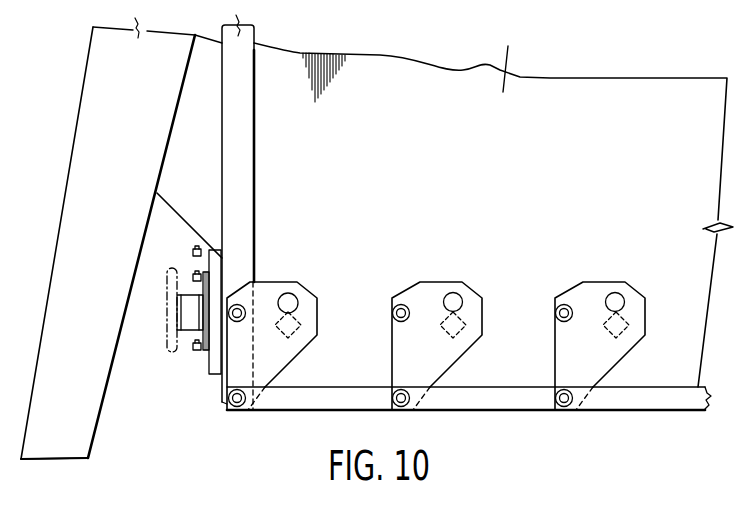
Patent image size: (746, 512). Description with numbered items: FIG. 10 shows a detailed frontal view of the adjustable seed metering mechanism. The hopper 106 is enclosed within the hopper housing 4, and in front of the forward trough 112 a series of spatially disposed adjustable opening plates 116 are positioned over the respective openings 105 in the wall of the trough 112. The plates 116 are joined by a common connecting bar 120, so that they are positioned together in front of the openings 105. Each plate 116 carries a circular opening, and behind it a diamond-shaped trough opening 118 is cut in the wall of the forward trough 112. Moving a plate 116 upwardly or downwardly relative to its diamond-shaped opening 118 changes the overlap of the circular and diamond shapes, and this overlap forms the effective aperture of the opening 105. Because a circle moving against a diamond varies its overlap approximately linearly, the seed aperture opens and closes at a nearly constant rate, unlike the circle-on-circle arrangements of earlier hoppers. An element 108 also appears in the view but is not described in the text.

The hopper housing 4 is at (117, 152).
The seed opening 105 is at (621, 302).
The hopper 106 is at (173, 208).
The handle 108 is at (167, 318).
The forward trough 112 is at (497, 218).
The adjustable opening plate 116 is at (407, 288).
The diamond-shaped trough opening 118 is at (466, 326).
The common connecting bar 120 is at (337, 400).